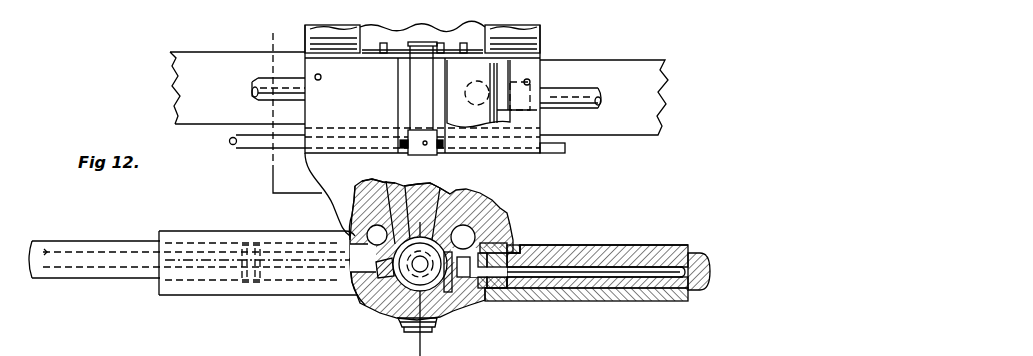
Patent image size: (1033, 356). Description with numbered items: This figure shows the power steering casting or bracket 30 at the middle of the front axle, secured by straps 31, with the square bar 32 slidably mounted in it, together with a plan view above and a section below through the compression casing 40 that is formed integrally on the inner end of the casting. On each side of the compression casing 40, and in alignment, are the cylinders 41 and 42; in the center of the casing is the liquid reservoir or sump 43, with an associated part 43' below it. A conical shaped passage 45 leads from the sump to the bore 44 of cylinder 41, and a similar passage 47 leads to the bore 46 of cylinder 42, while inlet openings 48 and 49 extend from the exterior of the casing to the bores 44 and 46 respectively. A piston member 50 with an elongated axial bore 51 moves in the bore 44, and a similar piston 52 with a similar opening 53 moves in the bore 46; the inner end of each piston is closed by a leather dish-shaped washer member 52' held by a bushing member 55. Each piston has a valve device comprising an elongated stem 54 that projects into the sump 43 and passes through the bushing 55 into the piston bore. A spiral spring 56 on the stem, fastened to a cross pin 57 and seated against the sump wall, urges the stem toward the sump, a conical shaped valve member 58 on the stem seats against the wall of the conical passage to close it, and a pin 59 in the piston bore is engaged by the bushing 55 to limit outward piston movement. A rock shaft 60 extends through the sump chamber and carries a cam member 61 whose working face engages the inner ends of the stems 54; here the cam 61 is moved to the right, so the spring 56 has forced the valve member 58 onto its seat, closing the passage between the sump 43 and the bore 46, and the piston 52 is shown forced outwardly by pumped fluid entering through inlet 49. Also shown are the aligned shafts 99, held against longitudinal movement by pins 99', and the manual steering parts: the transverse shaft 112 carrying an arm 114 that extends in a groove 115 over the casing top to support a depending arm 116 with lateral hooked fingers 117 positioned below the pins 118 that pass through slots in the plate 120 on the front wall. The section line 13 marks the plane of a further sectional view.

The section line 13 is at (280, 38).
The casting or bracket 30 is at (512, 213).
The straps 31 is at (308, 26).
The bar 32 is at (192, 88).
The compression casing 40 is at (507, 229).
The cylinder 41 is at (570, 241).
The cylinder 42 is at (220, 238).
The liquid reservoir or sump 43 is at (431, 260).
The cap 43' is at (393, 337).
The bore 44 is at (513, 291).
The conical shaped passage 45 is at (449, 293).
The bore 46 is at (350, 287).
The passage 47 is at (373, 300).
The inlet opening 48 is at (490, 200).
The inlet opening 49 is at (347, 227).
The piston member 50 is at (704, 256).
The elongated axial opening or bore 51 is at (604, 257).
The piston 52 is at (94, 239).
The leather dish-shaped washer member 52' is at (371, 291).
The opening 53 is at (97, 262).
The stem 54 is at (325, 267).
The bushing member 55 is at (230, 260).
The spiral spring 56 is at (378, 188).
The cross pin 57 is at (473, 212).
The conical shaped valve member 58 is at (352, 252).
The pin 59 is at (230, 253).
The rock shaft 60 is at (406, 193).
The cam member 61 is at (440, 203).
The shaft 99 is at (415, 121).
The pin 99' is at (443, 86).
The transverse shaft 112 is at (262, 145).
The arm 114 is at (418, 86).
The groove 115 is at (403, 113).
The depending arm 116 is at (434, 41).
The lateral hooked fingers 117 is at (368, 42).
The pins 118 is at (385, 43).
The plate 120 is at (356, 60).